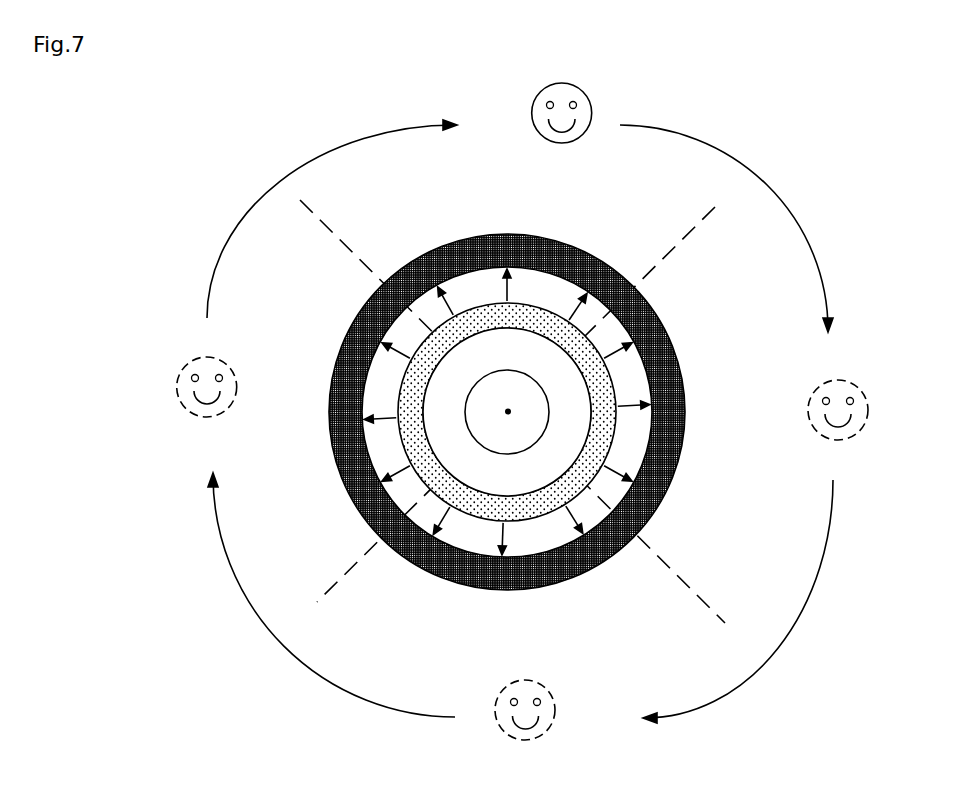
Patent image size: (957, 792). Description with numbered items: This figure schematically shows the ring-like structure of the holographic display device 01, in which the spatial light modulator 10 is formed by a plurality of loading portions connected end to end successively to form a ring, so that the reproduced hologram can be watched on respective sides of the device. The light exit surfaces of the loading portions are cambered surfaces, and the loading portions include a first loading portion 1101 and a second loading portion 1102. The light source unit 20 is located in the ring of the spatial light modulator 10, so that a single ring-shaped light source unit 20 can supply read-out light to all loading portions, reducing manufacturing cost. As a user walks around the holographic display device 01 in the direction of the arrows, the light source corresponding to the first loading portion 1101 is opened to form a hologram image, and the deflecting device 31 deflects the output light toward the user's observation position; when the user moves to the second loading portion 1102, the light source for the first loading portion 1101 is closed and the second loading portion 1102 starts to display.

The holographic display device 01 is at (242, 145).
The spatial light modulator 10 is at (619, 403).
The light source unit 20 is at (512, 454).
The deflecting device 31 is at (350, 328).
The first loading portion 1101 is at (530, 320).
The second loading portion 1102 is at (592, 366).